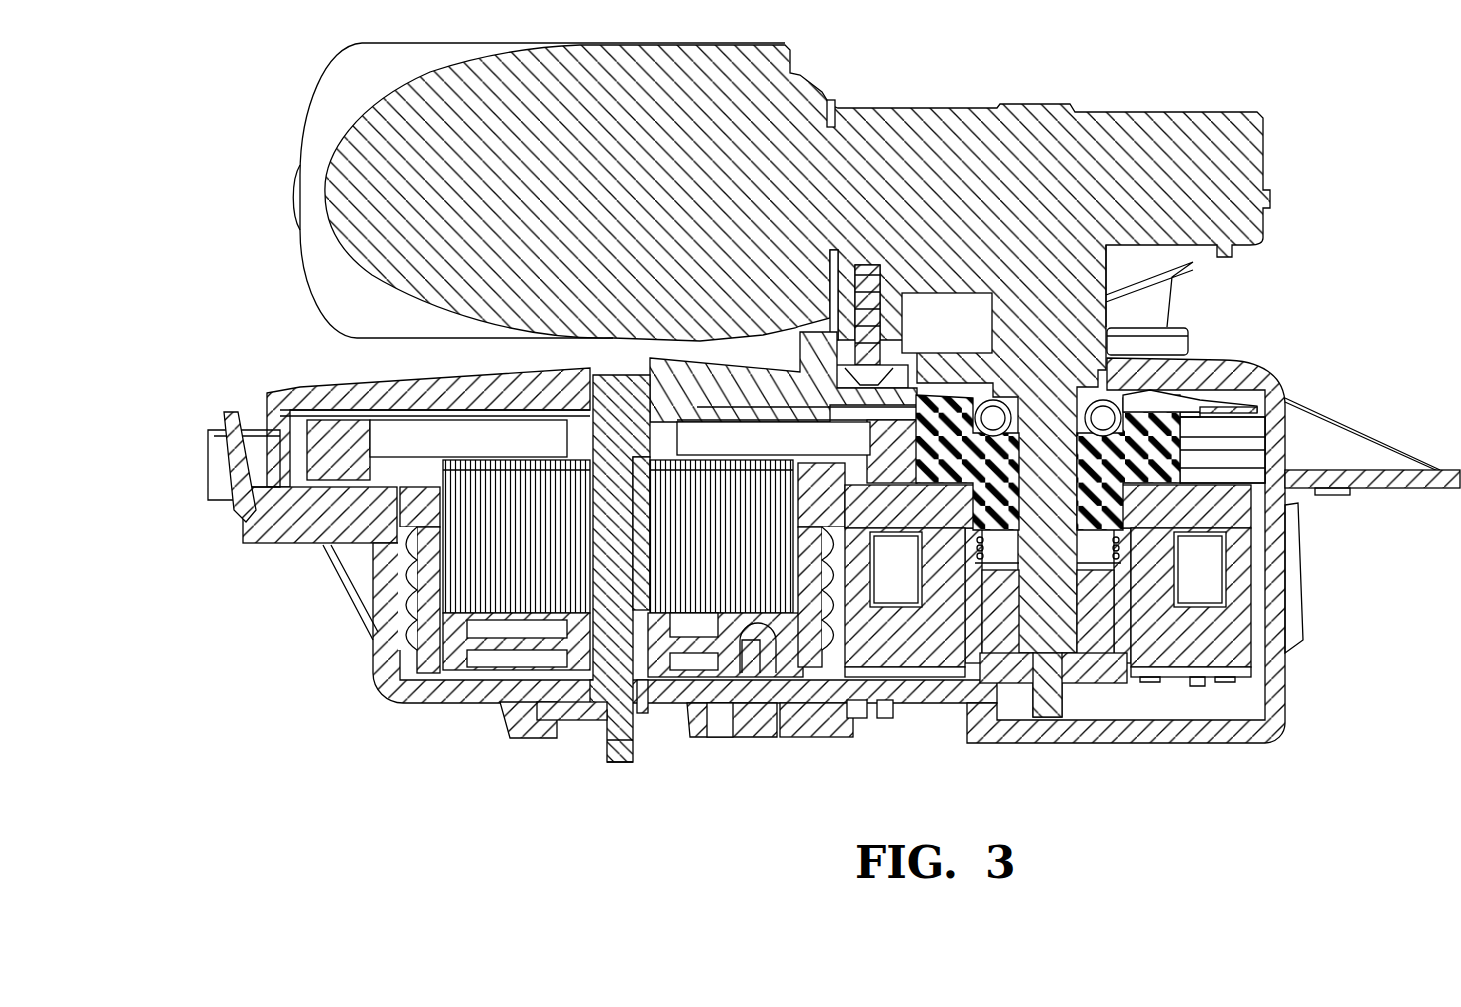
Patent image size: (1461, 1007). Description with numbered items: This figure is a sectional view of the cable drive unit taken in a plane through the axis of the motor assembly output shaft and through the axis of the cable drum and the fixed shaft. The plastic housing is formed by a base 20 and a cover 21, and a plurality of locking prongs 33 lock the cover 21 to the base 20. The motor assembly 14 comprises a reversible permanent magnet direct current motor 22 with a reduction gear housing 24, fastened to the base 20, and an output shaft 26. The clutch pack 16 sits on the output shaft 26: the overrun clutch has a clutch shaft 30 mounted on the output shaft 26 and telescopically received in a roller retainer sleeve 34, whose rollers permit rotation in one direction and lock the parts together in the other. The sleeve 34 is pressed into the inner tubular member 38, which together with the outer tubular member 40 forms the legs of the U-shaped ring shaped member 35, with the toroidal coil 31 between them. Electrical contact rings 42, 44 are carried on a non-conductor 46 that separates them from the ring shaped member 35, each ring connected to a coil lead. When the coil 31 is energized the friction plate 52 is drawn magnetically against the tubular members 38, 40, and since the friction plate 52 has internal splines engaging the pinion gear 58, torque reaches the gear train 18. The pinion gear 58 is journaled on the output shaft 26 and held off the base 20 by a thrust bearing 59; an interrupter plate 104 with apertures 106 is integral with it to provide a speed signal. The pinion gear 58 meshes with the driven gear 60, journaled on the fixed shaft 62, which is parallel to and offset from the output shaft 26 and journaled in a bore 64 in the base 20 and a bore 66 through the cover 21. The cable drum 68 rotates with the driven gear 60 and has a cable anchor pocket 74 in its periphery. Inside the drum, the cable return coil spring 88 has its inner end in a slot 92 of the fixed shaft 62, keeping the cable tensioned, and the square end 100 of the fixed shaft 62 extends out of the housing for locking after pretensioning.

The motor assembly 14 is at (1292, 183).
The clutch pack 16 is at (1253, 635).
The gear train 18 is at (1182, 433).
The base 20 is at (318, 385).
The cover 21 is at (433, 703).
The permanent magnet direct current motor 22 is at (818, 78).
The reduction gear housing 24 is at (1250, 247).
The output shaft 26 is at (1043, 703).
The clutch shaft 30 is at (1000, 650).
The toroidal coil 31 is at (1203, 570).
The locking prongs 33 is at (233, 473).
The roller retainer sleeve 34 is at (940, 660).
The ring shaped member 35 is at (1253, 653).
The inner tubular member 38 is at (1333, 468).
The outer tubular member 40 is at (1240, 547).
The electrical contact ring 42 is at (1150, 677).
The electrical contact ring 44 is at (1223, 677).
The non-conductor 46 is at (1197, 677).
The friction plate 52 is at (1253, 507).
The pinion gear 58 is at (1182, 450).
The thrust bearing 59 is at (1112, 416).
The driven gear 60 is at (287, 445).
The fixed shaft 62 is at (652, 388).
The bore 64 is at (590, 402).
The bore 66 is at (641, 690).
The cable drum 68 is at (400, 607).
The cable anchor pocket 74 is at (773, 663).
The cable return coil spring 88 is at (460, 577).
The slot 92 is at (634, 753).
The square end 100 is at (603, 737).
The interrupter plate 104 is at (1230, 408).
The apertures 106 is at (1245, 408).